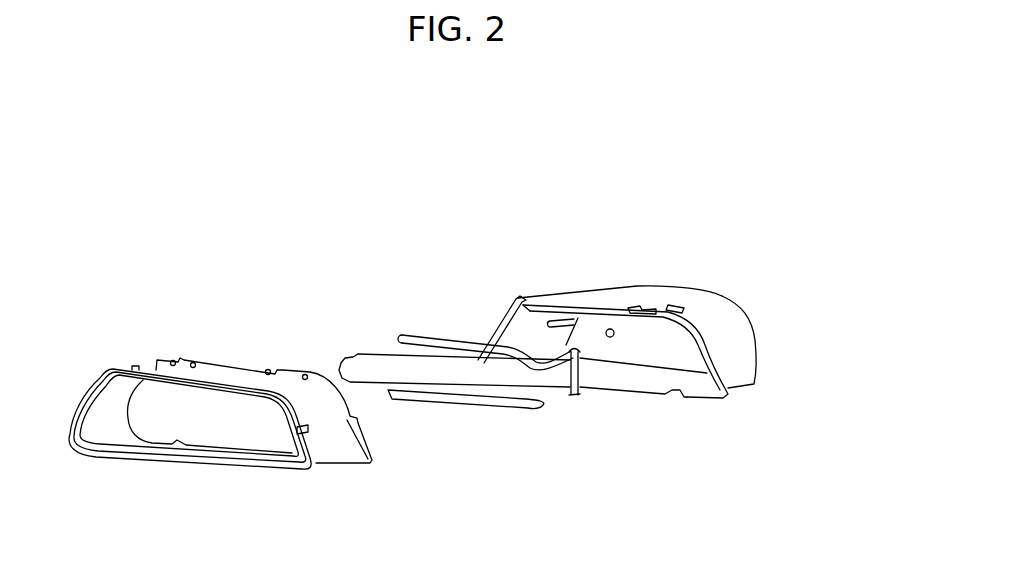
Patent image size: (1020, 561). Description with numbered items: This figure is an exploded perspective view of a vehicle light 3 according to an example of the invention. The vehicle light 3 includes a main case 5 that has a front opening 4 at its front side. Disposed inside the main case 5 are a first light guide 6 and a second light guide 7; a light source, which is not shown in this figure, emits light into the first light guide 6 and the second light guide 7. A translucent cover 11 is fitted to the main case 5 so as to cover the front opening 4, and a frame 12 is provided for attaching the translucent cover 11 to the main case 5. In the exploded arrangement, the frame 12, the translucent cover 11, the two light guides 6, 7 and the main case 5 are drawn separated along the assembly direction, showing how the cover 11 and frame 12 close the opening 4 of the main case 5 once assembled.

The vehicle light 3 is at (788, 213).
The front opening 4 is at (694, 328).
The main case 5 is at (737, 362).
The first light guide 6 is at (437, 338).
The second light guide 7 is at (503, 382).
The translucent cover 11 is at (215, 400).
The frame 12 is at (135, 458).